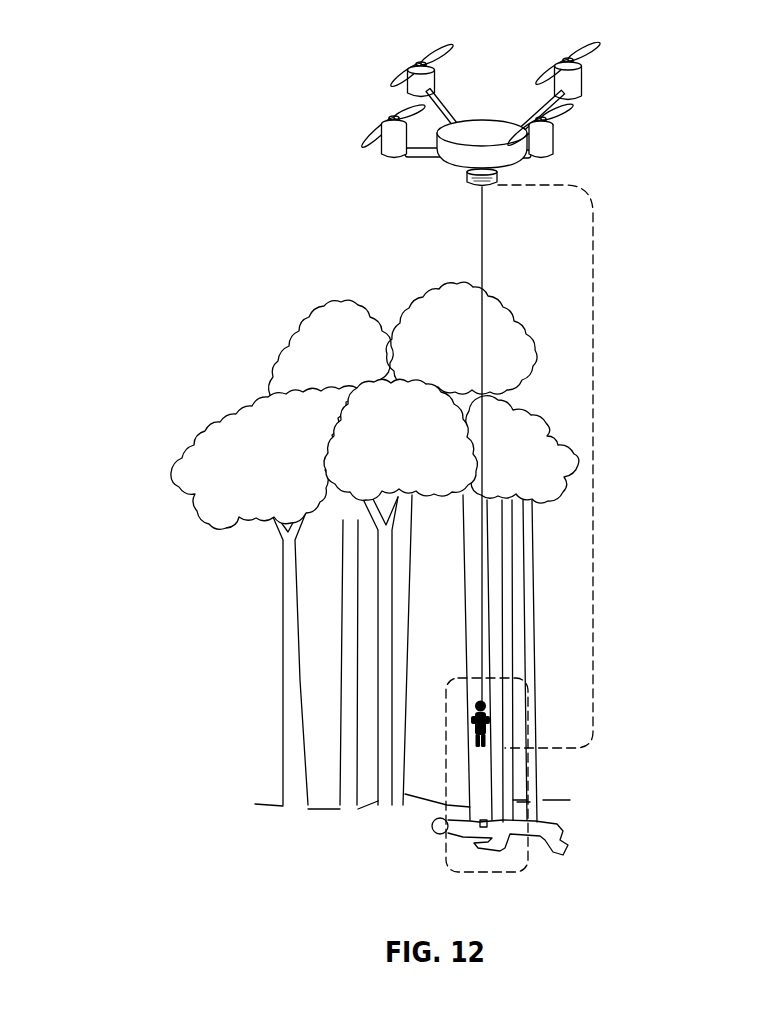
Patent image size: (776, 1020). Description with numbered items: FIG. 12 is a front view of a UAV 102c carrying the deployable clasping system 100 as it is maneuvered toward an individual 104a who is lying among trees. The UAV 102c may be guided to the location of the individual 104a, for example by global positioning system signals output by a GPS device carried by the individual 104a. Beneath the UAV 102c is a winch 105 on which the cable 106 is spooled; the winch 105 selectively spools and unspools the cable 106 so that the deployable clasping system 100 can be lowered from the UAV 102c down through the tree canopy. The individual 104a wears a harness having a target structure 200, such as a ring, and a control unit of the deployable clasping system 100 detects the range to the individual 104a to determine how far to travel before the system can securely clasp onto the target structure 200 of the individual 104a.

The deployable clasping system 100 is at (593, 432).
The UAV 102c is at (606, 74).
The winch 105 is at (468, 183).
The cable 106 is at (480, 228).
The individual 104a is at (432, 832).
The target structure 200 is at (486, 820).